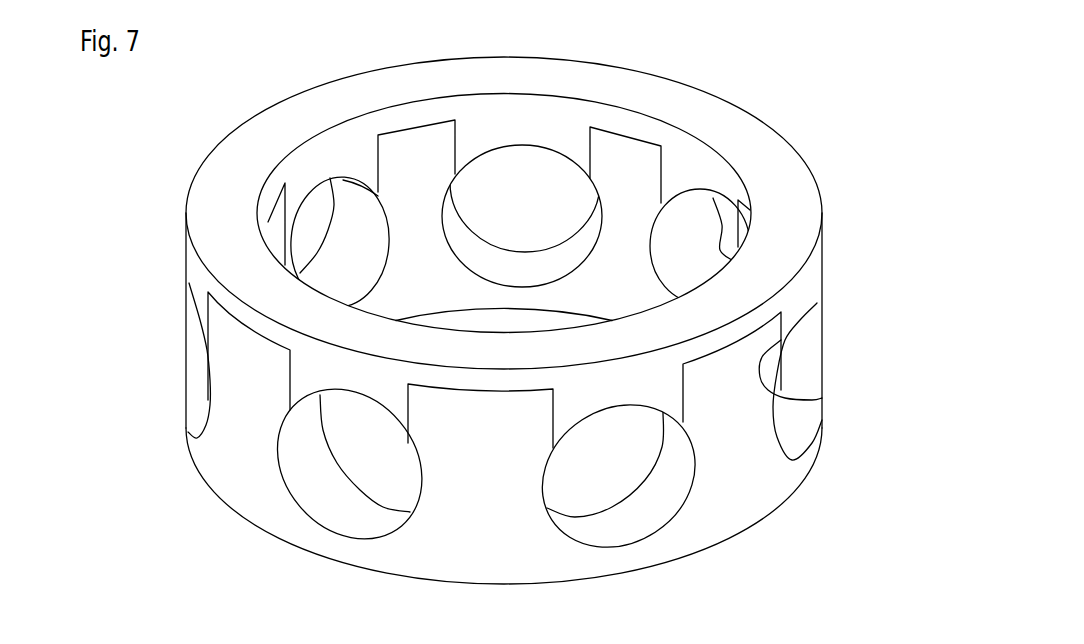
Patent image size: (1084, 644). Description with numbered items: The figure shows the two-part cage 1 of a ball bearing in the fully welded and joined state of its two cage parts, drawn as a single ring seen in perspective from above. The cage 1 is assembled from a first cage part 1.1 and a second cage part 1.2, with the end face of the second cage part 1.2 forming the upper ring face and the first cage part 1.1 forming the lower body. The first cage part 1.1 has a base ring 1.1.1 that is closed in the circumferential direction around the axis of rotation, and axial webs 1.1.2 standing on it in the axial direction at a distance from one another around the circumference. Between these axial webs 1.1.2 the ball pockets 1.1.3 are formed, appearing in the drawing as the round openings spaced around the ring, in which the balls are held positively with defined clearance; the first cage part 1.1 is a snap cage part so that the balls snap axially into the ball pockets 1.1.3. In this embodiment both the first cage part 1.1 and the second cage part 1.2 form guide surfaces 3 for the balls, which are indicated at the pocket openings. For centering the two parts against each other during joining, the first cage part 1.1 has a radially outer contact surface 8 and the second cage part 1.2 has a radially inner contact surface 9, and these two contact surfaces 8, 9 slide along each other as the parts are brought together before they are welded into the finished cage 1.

The cage 1 is at (857, 147).
The first cage part 1.1 is at (240, 450).
The base ring 1.1.1 is at (285, 512).
The axial webs 1.1.2 is at (730, 413).
The ball pockets 1.1.3 is at (615, 488).
The second cage part 1.2 is at (262, 148).
The guide surfaces 3 is at (316, 452).
The radially outer contact surface 8 is at (781, 326).
The radially inner contact surface 9 is at (822, 398).